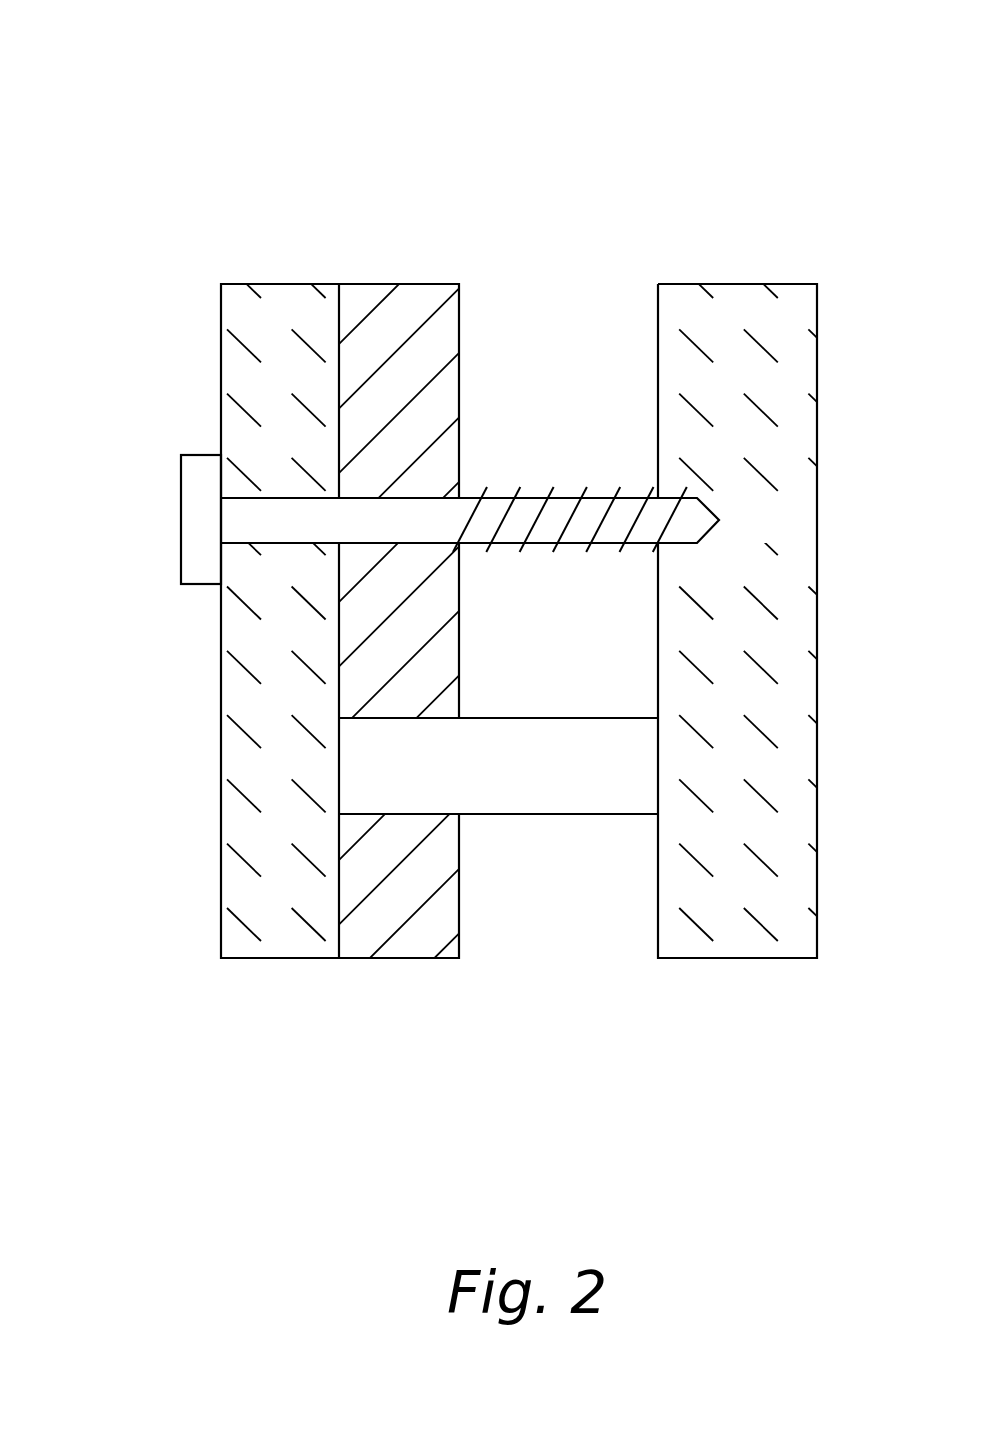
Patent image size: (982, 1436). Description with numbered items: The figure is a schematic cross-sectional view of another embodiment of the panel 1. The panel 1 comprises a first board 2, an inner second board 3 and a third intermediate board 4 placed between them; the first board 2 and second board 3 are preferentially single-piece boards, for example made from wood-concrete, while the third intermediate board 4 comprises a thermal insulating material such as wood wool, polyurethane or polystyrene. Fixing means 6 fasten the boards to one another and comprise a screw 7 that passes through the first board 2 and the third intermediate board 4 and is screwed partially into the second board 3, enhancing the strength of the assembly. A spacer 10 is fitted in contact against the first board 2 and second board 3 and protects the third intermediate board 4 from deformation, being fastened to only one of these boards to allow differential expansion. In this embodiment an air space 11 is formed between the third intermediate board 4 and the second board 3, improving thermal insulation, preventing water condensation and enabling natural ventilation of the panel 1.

The panel 1 is at (778, 104).
The first board 2 is at (272, 300).
The second board 3 is at (758, 308).
The third intermediate board 4 is at (390, 300).
The fixing means 6 is at (148, 532).
The screw 7 is at (557, 510).
The spacer 10 is at (557, 773).
The air space 11 is at (563, 288).